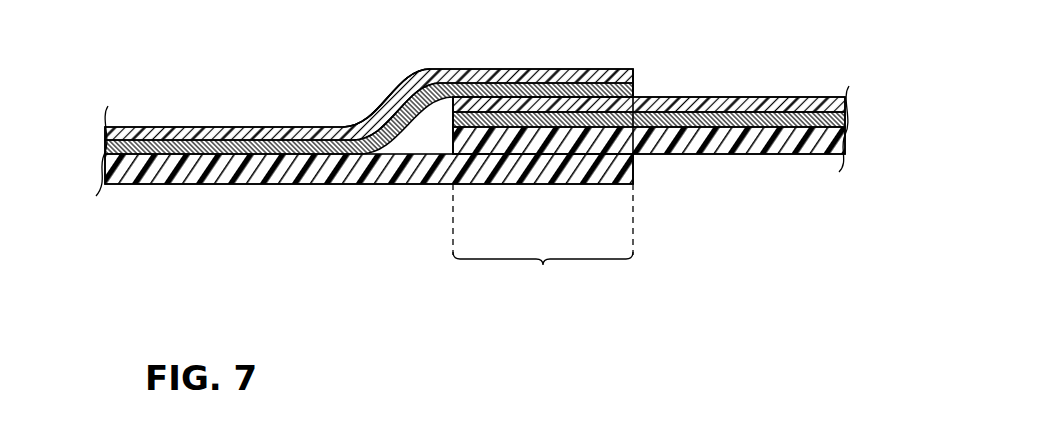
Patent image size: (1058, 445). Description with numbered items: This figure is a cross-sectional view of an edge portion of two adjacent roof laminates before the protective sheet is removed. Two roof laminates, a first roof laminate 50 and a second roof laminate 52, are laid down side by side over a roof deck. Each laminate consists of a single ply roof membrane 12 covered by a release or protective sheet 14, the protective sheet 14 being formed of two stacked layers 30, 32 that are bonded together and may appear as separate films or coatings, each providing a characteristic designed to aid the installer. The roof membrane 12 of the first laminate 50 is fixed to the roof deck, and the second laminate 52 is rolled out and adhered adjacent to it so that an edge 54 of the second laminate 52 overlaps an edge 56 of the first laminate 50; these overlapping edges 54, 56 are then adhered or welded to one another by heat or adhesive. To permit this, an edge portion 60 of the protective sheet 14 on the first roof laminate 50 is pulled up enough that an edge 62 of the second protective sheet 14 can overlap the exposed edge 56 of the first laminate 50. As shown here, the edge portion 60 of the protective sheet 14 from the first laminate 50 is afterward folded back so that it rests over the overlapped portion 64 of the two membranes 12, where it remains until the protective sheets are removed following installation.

The roof membrane 12 is at (412, 188).
The protective sheet 14 is at (475, 77).
The layer 30 is at (479, 70).
The layer 32 is at (525, 87).
The first roof laminate 50 is at (186, 198).
The second roof laminate 52 is at (810, 176).
The edge 54 is at (462, 143).
The edge 56 is at (612, 172).
The edge portion 60 is at (603, 70).
The edge 62 is at (450, 70).
The overlapped portion 64 is at (543, 239).